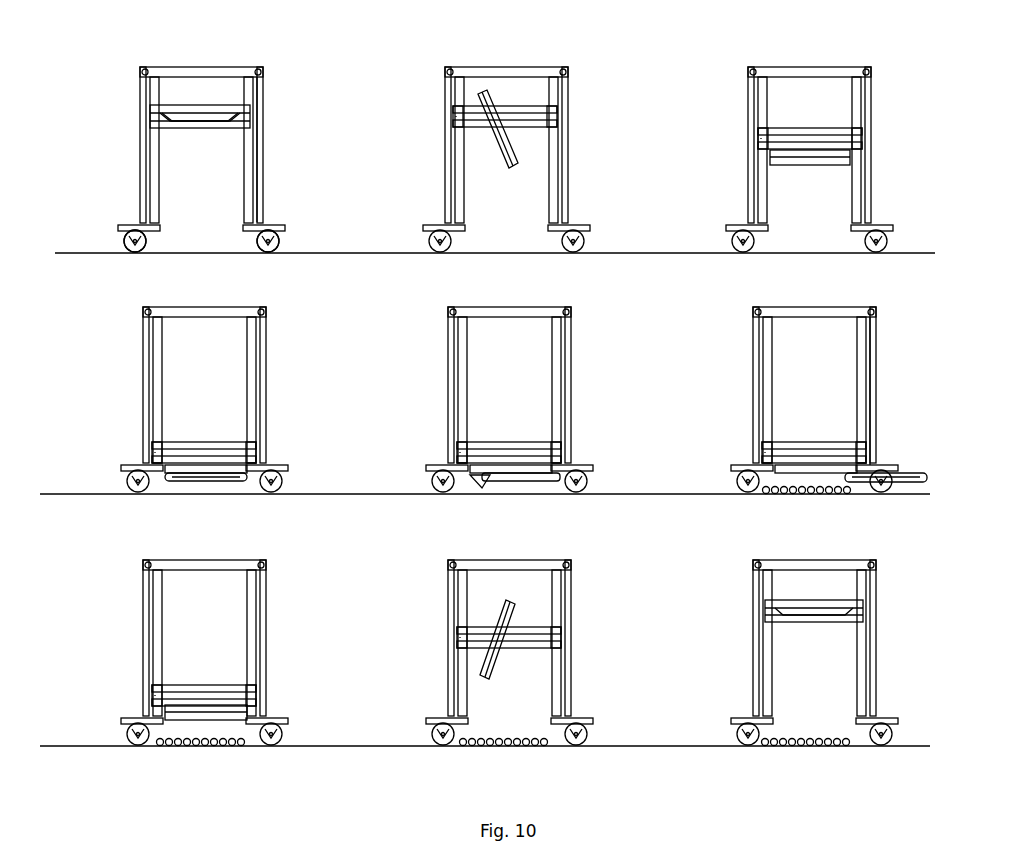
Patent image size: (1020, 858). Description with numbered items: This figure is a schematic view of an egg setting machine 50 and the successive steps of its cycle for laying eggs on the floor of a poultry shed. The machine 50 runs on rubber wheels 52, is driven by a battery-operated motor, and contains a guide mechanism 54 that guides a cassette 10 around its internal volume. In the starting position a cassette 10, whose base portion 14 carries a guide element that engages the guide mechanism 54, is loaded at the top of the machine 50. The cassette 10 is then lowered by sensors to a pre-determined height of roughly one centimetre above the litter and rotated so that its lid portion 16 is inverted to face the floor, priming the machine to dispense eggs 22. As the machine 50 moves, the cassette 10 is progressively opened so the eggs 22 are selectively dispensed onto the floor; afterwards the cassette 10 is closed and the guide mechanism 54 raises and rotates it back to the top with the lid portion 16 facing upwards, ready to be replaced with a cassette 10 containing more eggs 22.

The cassette 10 is at (154, 118).
The base portion 14 is at (178, 124).
The lid portion 16 is at (488, 148).
The eggs 22 is at (187, 120).
The egg setting machine 50 is at (288, 84).
The rubber wheels 52 is at (130, 252).
The guide mechanism 54 is at (248, 148).